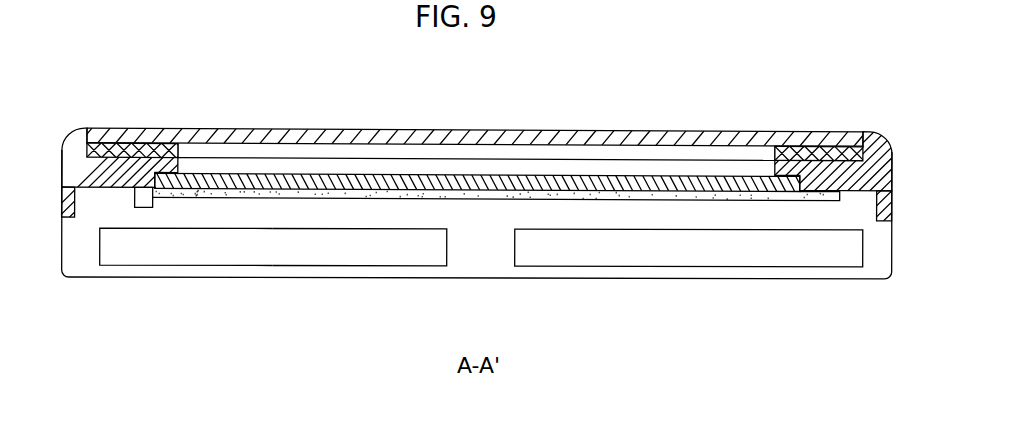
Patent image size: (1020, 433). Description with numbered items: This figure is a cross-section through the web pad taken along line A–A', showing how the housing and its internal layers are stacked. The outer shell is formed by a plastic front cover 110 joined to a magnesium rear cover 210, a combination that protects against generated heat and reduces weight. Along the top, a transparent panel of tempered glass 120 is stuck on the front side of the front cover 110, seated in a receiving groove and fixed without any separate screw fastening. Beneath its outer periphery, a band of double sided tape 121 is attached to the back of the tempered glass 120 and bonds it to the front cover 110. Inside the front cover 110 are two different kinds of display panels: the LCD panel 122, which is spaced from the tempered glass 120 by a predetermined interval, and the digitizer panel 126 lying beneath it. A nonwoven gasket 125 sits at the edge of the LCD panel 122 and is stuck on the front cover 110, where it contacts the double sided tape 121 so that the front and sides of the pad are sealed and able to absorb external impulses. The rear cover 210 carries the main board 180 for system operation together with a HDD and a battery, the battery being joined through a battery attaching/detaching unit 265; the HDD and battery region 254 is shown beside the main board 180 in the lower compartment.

The front cover 110 is at (873, 138).
The tempered glass 120 is at (273, 135).
The double sided tape 121 is at (137, 145).
The LCD panel 122 is at (388, 177).
The nonwoven gasket 125 is at (783, 168).
The digitizer panel 126 is at (473, 195).
The main board 180 is at (820, 260).
The rear cover 210 is at (82, 260).
The hard disk drive 254 is at (172, 257).
The battery attaching/detaching unit 265 is at (407, 257).